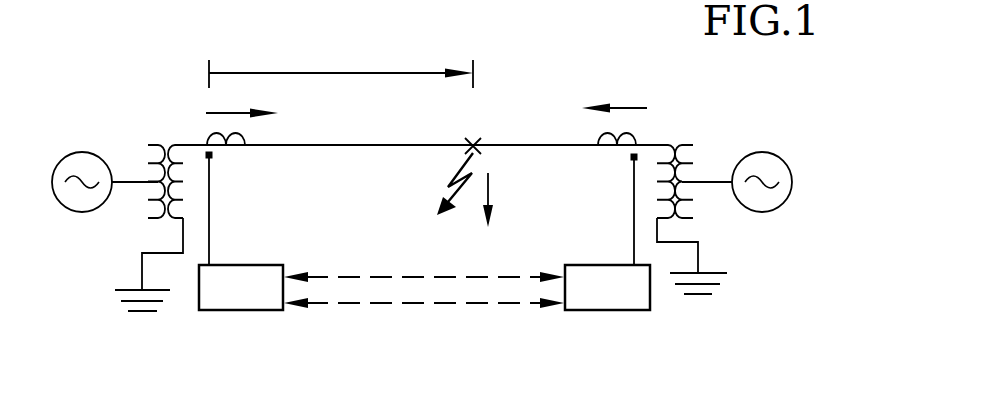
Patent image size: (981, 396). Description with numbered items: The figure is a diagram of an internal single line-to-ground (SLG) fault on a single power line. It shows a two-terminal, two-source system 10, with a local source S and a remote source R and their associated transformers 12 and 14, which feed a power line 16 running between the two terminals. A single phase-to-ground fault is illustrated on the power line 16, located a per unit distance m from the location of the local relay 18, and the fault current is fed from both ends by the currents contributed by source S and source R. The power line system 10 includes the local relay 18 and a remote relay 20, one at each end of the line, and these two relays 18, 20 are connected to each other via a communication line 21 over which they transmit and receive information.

The two-terminal, two-source system 10 is at (545, 97).
The transformer 12 is at (167, 140).
The transformer 14 is at (677, 143).
The power line 16 is at (383, 147).
The local relay 18 is at (245, 312).
The remote relay 20 is at (603, 312).
The communication line 21 is at (413, 304).